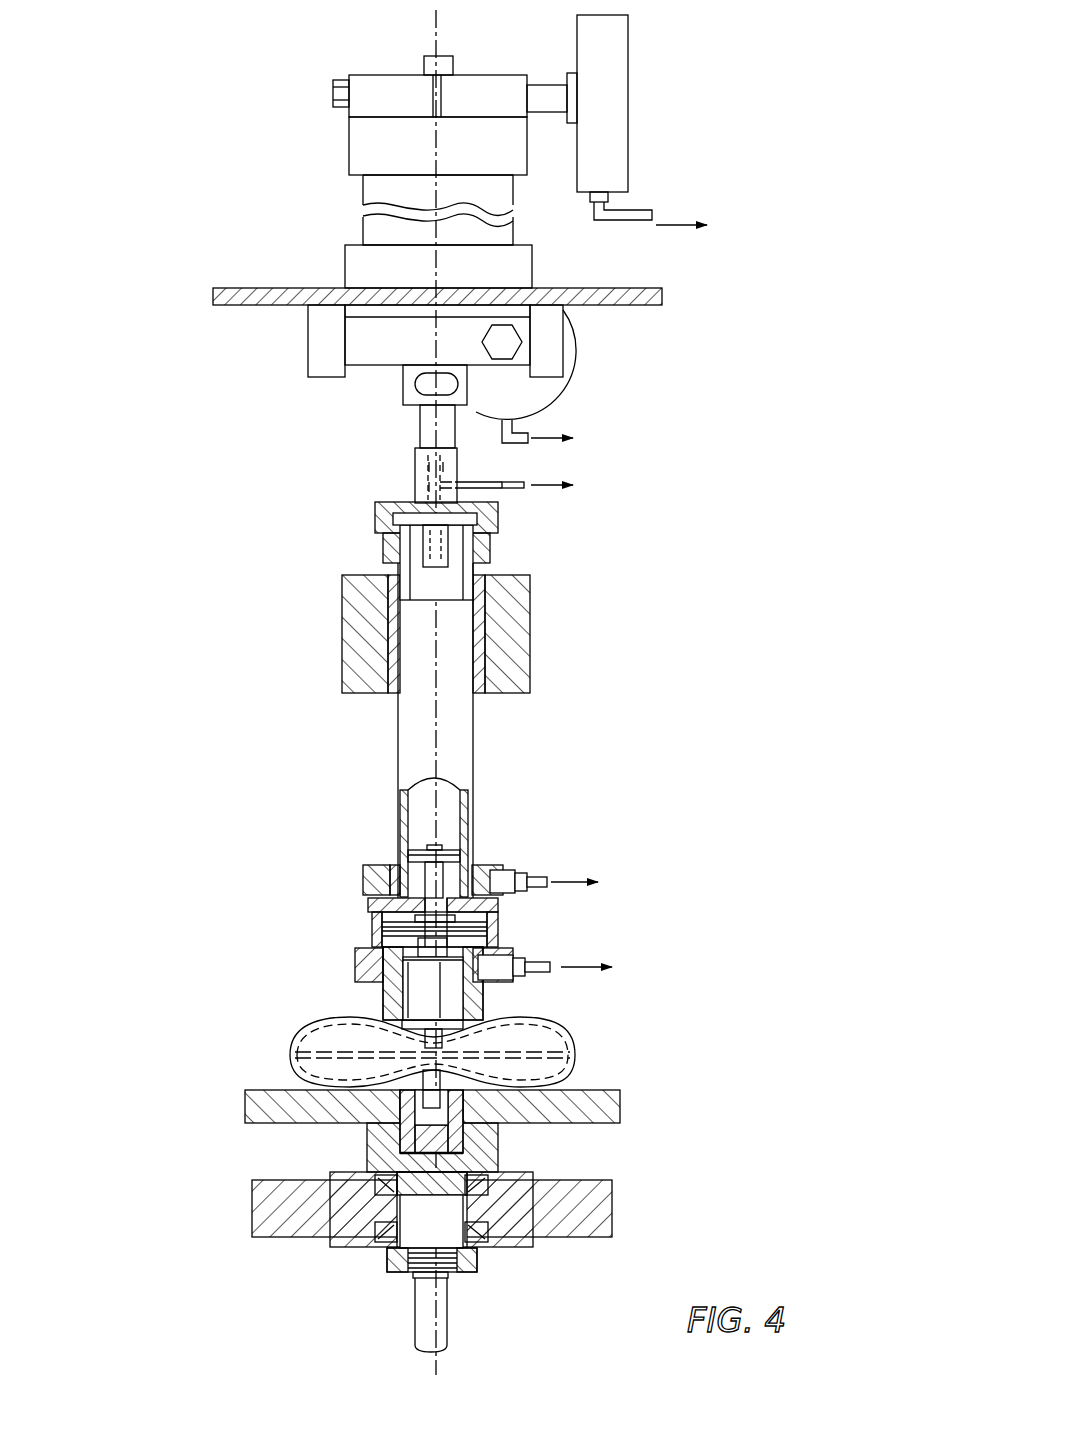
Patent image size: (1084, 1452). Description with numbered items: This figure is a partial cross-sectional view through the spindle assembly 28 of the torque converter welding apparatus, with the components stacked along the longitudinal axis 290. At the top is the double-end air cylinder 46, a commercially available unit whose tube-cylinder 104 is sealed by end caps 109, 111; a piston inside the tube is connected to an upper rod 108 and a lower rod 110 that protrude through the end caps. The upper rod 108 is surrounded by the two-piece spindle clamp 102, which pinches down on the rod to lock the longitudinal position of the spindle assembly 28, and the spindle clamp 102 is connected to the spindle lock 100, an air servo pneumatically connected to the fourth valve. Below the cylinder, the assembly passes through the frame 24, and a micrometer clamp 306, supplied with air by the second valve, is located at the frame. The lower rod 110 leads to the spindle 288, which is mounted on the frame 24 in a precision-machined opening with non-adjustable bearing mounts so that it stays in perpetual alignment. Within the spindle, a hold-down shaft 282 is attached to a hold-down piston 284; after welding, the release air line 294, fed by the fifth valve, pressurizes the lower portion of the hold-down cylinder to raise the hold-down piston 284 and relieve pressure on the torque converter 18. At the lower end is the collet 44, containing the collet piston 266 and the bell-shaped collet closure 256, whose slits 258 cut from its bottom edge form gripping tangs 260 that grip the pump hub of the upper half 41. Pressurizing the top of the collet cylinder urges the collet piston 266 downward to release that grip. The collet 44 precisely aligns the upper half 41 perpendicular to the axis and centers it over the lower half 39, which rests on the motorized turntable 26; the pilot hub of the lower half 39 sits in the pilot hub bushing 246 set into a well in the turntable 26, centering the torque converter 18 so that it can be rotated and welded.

The longitudinal axis 290 is at (442, 32).
The upper rod 108 is at (424, 53).
The spindle clamp 102 is at (473, 73).
The end cap 109 is at (347, 143).
The spindle lock 100 is at (630, 153).
The double-end air cylinder 46 is at (363, 230).
The tube-cylinder 104 is at (513, 230).
The end cap 111 is at (345, 268).
The frame 24 is at (635, 308).
The micrometer clamp 306 is at (572, 378).
The lower rod 110 is at (418, 433).
The spindle assembly 28 is at (482, 713).
The spindle 288 is at (398, 717).
The hold-down shaft 282 is at (423, 872).
The hold-down piston 284 is at (437, 845).
The release air line 294 is at (525, 872).
The collet 44 is at (471, 972).
The collet piston 266 is at (498, 933).
The collet closure 256 is at (423, 1000).
The gripping tangs 260 is at (450, 1005).
The slits 258 is at (447, 972).
The upper half 41 is at (578, 1037).
The torque converter 18 is at (482, 1061).
The lower half 39 is at (565, 1078).
The turntable 26 is at (622, 1103).
The pilot hub bushing 246 is at (463, 1133).